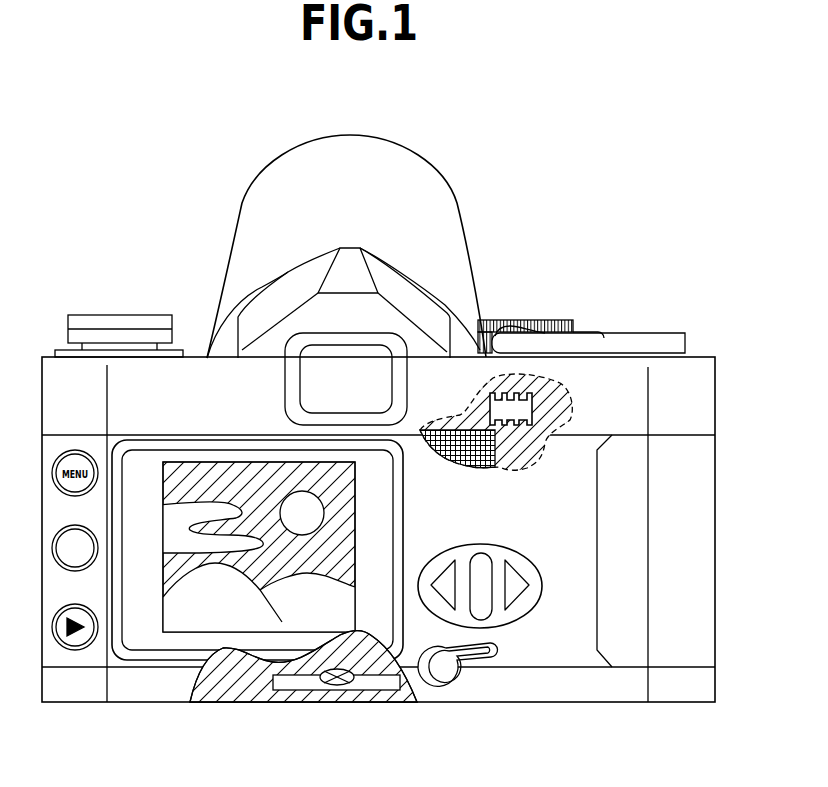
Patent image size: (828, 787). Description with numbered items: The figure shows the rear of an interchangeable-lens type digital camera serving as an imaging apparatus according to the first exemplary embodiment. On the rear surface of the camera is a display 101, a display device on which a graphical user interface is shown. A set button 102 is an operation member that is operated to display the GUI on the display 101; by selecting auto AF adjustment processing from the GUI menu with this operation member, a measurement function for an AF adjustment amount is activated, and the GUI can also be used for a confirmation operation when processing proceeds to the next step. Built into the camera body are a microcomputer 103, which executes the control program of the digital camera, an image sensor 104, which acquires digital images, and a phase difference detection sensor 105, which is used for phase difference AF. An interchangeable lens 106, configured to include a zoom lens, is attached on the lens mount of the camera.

The display 101 is at (122, 657).
The set button 102 is at (523, 620).
The microcomputer 103 is at (528, 397).
The image sensor 104 is at (493, 457).
The phase difference detection sensor 105 is at (303, 687).
The interchangeable lens 106 is at (453, 218).